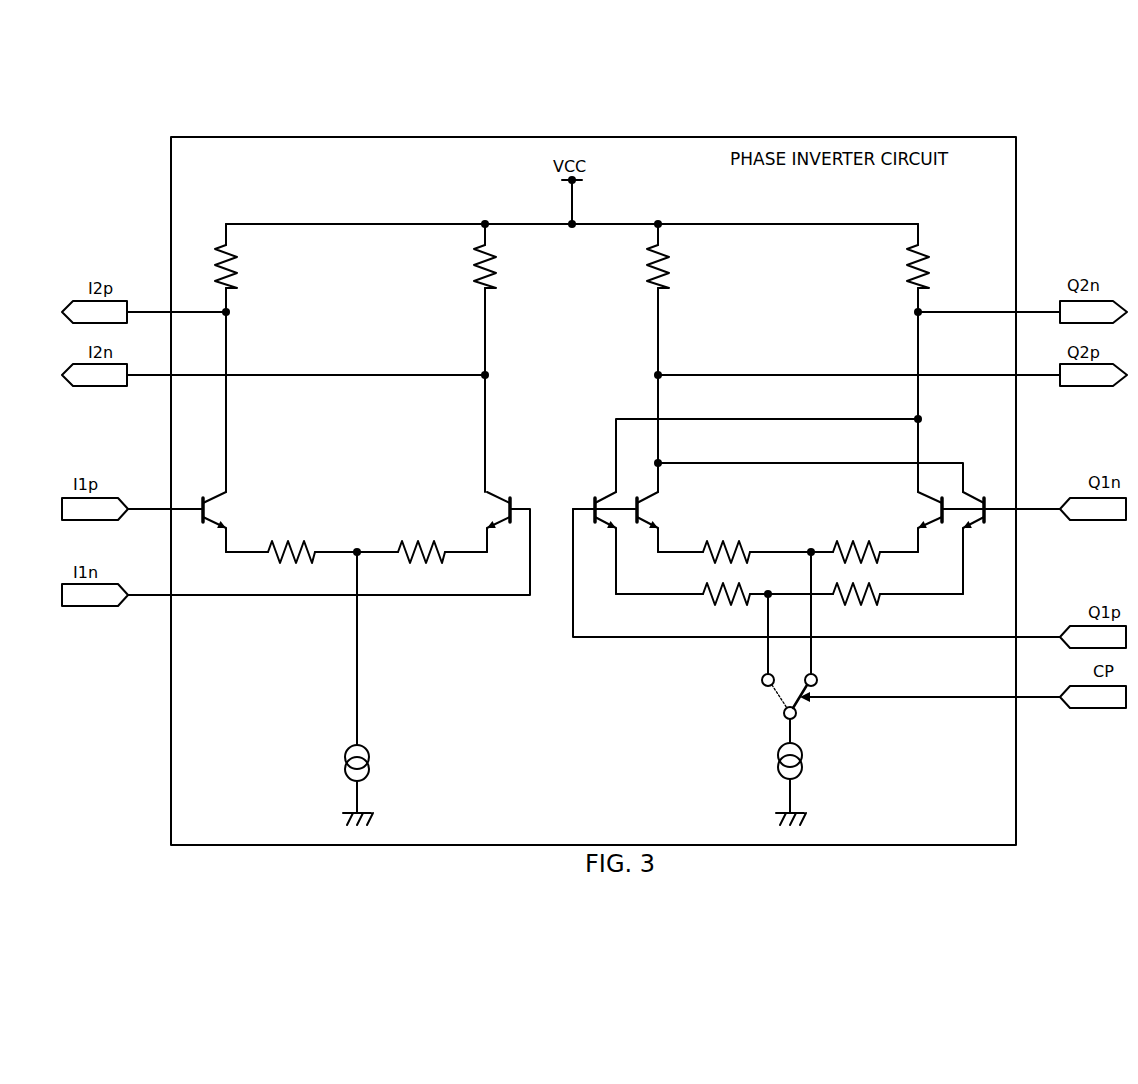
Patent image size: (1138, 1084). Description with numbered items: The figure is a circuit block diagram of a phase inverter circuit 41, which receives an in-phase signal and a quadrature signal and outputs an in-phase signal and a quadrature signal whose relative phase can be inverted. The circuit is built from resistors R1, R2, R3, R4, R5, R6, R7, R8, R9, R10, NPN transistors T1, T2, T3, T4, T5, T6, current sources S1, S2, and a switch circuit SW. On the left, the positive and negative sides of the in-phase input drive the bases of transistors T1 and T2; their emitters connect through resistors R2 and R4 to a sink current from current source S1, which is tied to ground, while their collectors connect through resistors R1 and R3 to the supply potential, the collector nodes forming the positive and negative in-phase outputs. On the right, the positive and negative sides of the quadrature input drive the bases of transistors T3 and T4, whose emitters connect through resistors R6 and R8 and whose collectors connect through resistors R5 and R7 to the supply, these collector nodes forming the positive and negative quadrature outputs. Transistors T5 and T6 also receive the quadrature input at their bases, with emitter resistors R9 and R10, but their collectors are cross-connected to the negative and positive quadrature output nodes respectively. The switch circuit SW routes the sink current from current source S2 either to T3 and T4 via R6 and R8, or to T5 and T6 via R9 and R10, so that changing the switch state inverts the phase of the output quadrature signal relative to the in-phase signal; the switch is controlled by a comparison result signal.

The phase inverter circuit 41 is at (962, 137).
The resistor R1 is at (238, 280).
The resistor R2 is at (305, 542).
The resistor R3 is at (497, 280).
The resistor R4 is at (434, 542).
The resistor R5 is at (670, 280).
The resistor R6 is at (739, 542).
The resistor R7 is at (930, 280).
The resistor R8 is at (868, 542).
The resistor R9 is at (739, 585).
The resistor R10 is at (868, 585).
The transistor T1 is at (211, 491).
The transistor T2 is at (502, 497).
The transistor T3 is at (645, 491).
The transistor T4 is at (934, 494).
The transistor T5 is at (602, 491).
The transistor T6 is at (977, 494).
The current source S1 is at (369, 757).
The current source S2 is at (802, 757).
The switch circuit SW is at (784, 713).